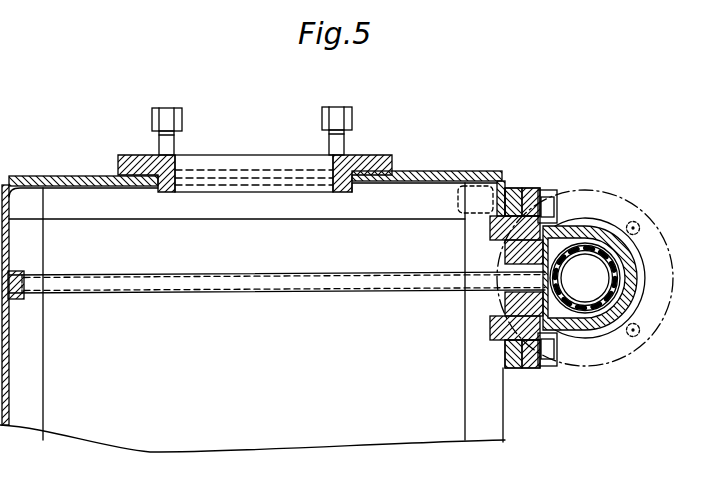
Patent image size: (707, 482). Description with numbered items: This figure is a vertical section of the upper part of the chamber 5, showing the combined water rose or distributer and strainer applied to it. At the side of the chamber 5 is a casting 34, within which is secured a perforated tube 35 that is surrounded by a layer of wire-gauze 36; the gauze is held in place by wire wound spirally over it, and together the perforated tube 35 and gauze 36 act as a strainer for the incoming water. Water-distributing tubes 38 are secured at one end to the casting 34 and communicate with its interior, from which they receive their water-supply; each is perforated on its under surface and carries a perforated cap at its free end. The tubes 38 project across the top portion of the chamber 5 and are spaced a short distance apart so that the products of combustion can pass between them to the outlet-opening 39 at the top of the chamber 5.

The chamber 5 is at (252, 311).
The casting 34 is at (628, 285).
The perforated tube 35 is at (614, 268).
The layer of wire-gauze 36 is at (537, 262).
The water-distributing tubes 38 is at (325, 273).
The outlet-opening 39 is at (233, 166).